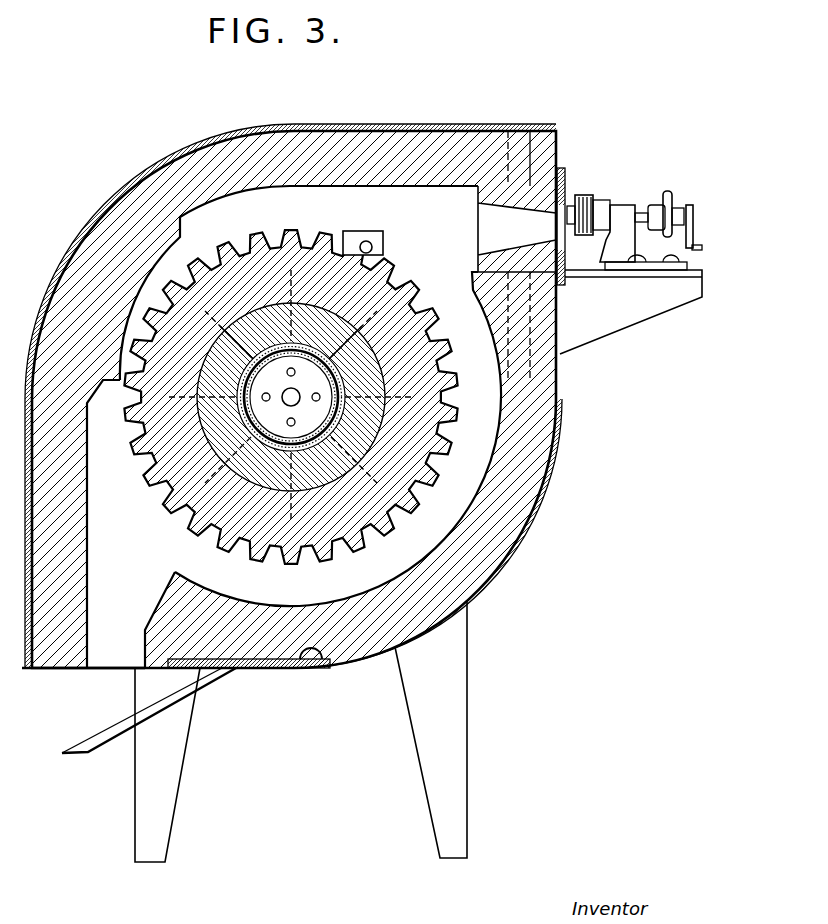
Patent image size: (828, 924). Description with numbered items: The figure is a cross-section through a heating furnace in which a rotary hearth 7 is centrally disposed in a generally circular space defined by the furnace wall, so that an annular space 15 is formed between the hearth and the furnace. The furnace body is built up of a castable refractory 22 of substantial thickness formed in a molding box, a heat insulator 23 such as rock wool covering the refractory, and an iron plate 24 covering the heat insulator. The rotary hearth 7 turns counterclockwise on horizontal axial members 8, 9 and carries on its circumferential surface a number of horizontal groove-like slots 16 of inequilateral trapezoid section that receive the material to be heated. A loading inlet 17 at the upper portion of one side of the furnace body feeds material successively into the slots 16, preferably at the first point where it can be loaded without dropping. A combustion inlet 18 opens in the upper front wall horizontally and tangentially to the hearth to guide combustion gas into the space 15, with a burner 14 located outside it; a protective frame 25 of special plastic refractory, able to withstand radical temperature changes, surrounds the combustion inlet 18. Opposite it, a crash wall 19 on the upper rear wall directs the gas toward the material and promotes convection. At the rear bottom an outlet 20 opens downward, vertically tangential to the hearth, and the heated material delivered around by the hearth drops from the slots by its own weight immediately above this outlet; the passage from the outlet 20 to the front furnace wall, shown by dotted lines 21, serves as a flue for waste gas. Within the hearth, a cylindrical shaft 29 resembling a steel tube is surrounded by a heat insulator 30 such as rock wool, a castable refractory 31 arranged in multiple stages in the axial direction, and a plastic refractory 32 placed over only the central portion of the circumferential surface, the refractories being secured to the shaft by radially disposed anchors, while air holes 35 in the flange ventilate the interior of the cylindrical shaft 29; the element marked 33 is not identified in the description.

The rotary hearth 7 is at (147, 458).
The axial member 8 is at (365, 125).
The axial member 9 is at (287, 392).
The burner 14 is at (617, 213).
The annular space 15 is at (477, 415).
The slots 16 is at (418, 300).
The loading inlet 17 is at (367, 241).
The combustion inlet 18 is at (493, 225).
The crash wall 19 is at (167, 235).
The outlet 20 is at (103, 652).
The flue passage 21 is at (145, 627).
The castable refractory 22 is at (230, 160).
The heat insulator 23 is at (317, 661).
The iron plate 24 is at (267, 670).
The protective frame 25 is at (565, 180).
The cylindrical shaft 29 is at (272, 433).
The heat insulator 30 is at (318, 438).
The castable refractory 31 is at (363, 362).
The plastic refractory 32 is at (292, 268).
The disc rim 33 is at (363, 463).
The air holes 35 is at (316, 393).